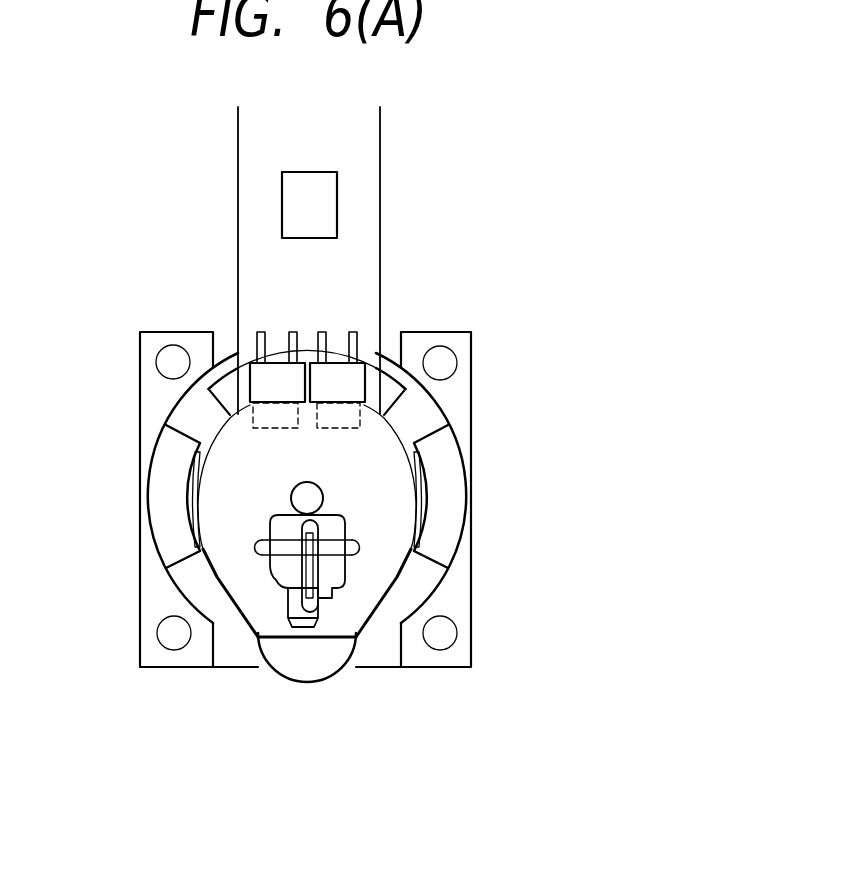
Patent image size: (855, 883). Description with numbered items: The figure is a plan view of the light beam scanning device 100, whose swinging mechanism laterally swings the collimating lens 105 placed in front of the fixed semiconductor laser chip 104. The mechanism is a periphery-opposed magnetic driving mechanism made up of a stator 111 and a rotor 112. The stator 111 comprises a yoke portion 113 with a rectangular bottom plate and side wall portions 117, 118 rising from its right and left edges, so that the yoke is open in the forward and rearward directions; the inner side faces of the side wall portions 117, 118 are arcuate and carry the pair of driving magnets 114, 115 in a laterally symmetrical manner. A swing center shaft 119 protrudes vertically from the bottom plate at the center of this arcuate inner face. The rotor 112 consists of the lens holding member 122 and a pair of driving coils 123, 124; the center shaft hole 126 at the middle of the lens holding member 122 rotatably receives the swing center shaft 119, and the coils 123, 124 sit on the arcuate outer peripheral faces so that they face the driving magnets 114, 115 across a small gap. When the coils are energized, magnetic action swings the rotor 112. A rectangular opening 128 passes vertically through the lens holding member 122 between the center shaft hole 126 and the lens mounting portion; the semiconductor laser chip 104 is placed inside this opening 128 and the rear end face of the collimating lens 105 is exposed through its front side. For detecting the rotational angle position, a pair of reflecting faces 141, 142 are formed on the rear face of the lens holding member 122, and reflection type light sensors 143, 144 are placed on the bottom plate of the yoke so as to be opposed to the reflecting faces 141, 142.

The light beam scanning device 100 is at (600, 342).
The semiconductor laser chip 104 is at (262, 597).
The collimating lens 105 is at (312, 662).
The stator 111 is at (473, 587).
The rotor 112 is at (380, 503).
The yoke portion 113 is at (450, 610).
The driving magnet 114 is at (448, 460).
The driving magnet 115 is at (167, 455).
The side wall portion 117 is at (465, 548).
The side wall portion 118 is at (148, 563).
The swing center shaft 119 is at (292, 501).
The lens holding member 122 is at (260, 585).
The driving coil 123 is at (375, 600).
The driving coil 124 is at (193, 487).
The center shaft hole 126 is at (314, 489).
The rectangular opening 128 is at (293, 600).
The reflecting face 141 is at (350, 407).
The reflecting face 142 is at (262, 413).
The reflection type light sensor 143 is at (335, 370).
The reflection type light sensor 144 is at (277, 367).